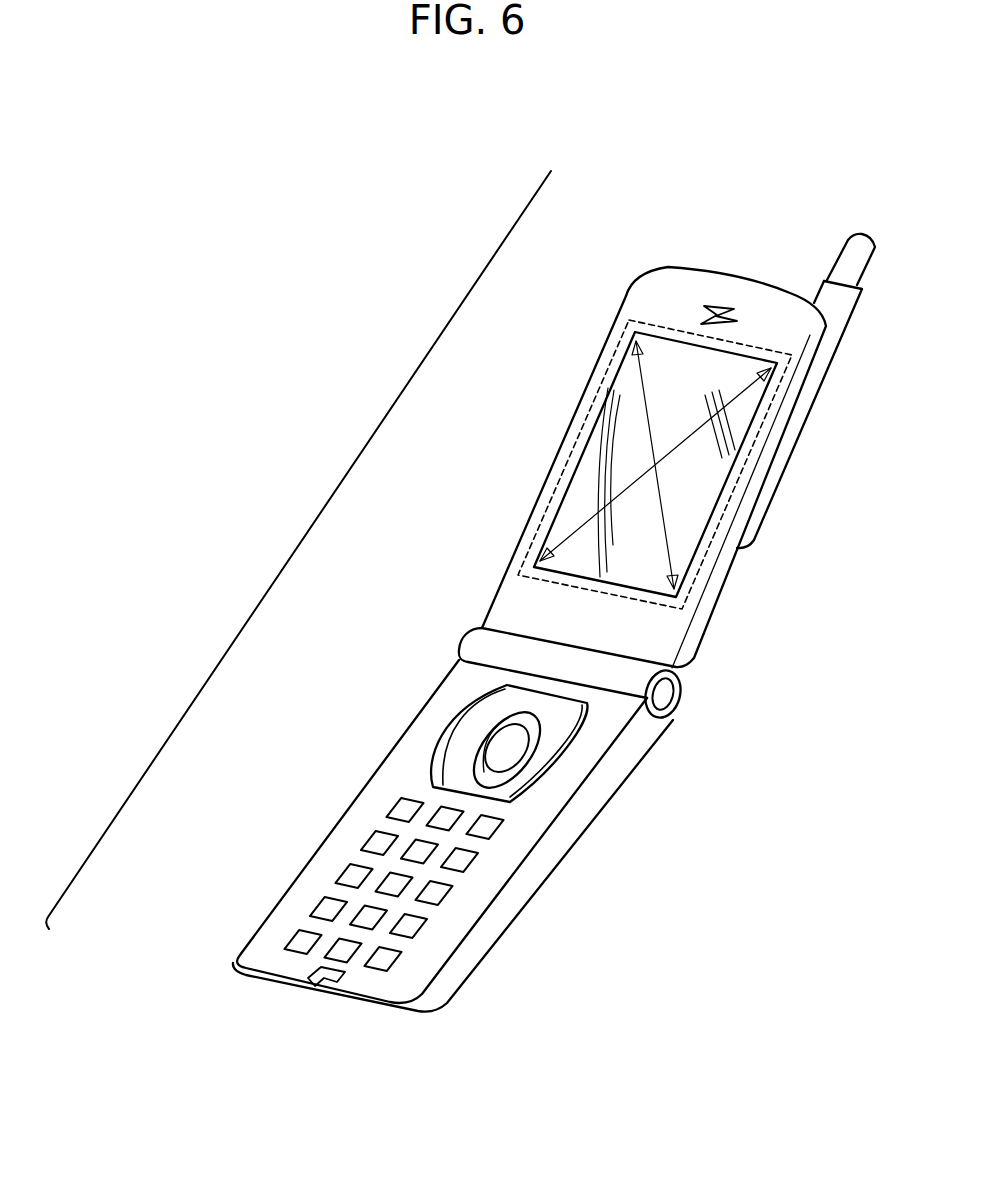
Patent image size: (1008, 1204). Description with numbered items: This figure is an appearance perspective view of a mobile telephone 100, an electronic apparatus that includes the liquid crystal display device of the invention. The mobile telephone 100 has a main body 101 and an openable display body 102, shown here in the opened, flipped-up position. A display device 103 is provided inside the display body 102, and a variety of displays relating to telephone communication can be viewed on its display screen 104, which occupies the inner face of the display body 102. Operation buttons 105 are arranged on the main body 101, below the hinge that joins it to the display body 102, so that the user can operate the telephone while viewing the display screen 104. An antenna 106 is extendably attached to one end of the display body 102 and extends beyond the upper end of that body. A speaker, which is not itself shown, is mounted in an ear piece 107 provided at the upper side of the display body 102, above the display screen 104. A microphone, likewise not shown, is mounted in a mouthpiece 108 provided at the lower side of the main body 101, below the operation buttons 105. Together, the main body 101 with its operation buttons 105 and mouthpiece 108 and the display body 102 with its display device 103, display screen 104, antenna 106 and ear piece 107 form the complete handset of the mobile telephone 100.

The mobile telephone 100 is at (416, 369).
The main body 101 is at (321, 872).
The display body 102 is at (727, 588).
The display device 103 is at (573, 442).
The display screen 104 is at (623, 397).
The operation buttons 105 is at (393, 914).
The antenna 106 is at (855, 250).
The ear piece 107 is at (715, 312).
The mouthpiece 108 is at (312, 978).